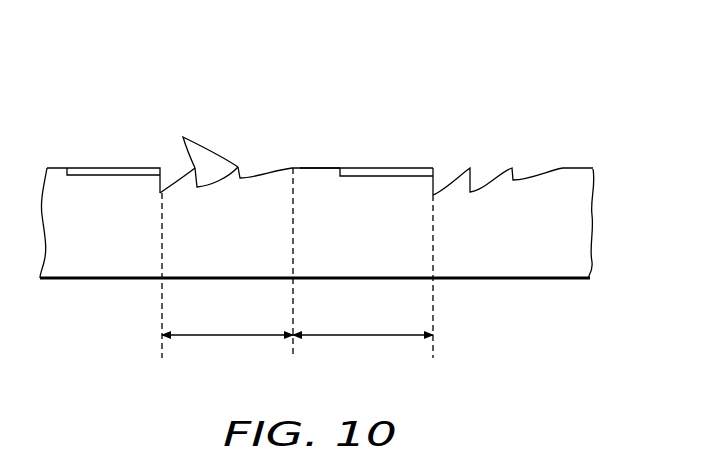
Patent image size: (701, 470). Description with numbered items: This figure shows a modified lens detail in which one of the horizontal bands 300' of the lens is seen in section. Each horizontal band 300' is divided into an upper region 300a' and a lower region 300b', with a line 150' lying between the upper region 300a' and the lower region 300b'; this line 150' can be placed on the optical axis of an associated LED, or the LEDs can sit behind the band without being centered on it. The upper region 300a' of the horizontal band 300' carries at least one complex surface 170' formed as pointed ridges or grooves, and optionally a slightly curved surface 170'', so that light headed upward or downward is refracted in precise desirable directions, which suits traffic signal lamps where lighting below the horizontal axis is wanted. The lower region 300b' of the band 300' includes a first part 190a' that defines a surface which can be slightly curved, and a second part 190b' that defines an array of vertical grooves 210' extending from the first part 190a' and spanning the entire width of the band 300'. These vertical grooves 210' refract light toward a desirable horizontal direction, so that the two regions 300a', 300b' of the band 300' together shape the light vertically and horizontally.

The horizontal band 300' is at (317, 149).
The line 150' is at (314, 216).
The complex surface 170' is at (190, 152).
The slightly curved surface 170'' is at (247, 145).
The first part 190a' is at (335, 135).
The second part 190b' is at (386, 146).
The vertical grooves 210' is at (504, 158).
The upper region 300a' is at (227, 275).
The lower region 300b' is at (363, 276).